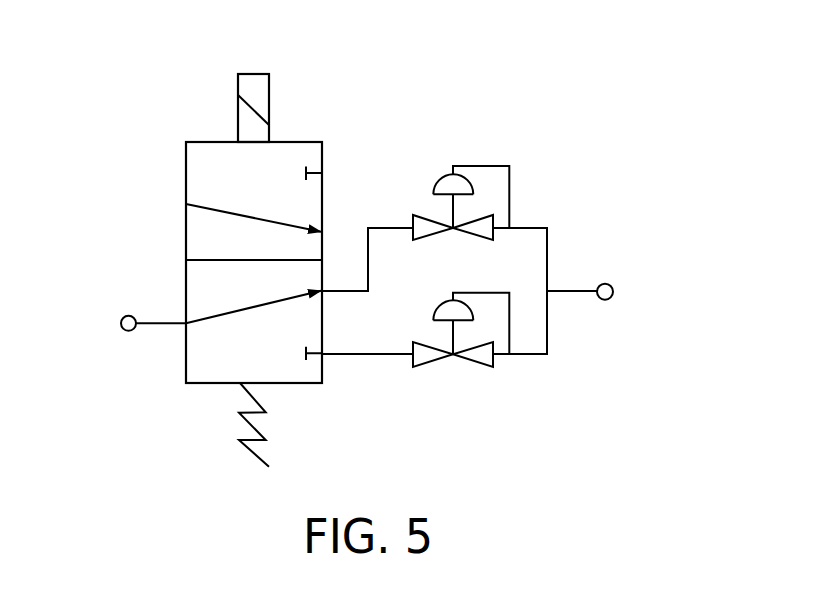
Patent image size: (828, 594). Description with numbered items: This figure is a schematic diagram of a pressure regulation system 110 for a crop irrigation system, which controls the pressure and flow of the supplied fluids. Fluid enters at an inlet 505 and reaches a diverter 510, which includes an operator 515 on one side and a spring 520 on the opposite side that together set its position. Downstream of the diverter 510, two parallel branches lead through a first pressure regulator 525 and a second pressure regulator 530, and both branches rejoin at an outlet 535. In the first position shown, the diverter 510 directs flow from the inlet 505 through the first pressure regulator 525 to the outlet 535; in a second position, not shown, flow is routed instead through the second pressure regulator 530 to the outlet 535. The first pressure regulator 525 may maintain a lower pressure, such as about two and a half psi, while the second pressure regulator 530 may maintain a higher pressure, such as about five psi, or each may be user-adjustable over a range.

The pressure regulation system 110 is at (689, 426).
The inlet 505 is at (127, 315).
The diverter 510 is at (209, 155).
The operator 515 is at (265, 94).
The spring 520 is at (216, 448).
The first pressure regulator 525 is at (492, 136).
The second pressure regulator 530 is at (472, 388).
The outlet 535 is at (603, 288).